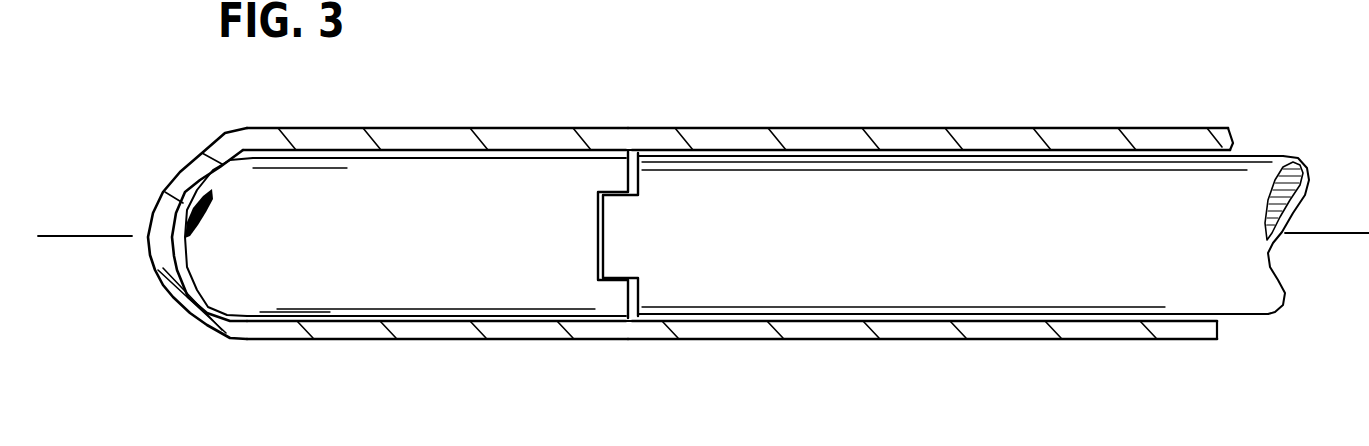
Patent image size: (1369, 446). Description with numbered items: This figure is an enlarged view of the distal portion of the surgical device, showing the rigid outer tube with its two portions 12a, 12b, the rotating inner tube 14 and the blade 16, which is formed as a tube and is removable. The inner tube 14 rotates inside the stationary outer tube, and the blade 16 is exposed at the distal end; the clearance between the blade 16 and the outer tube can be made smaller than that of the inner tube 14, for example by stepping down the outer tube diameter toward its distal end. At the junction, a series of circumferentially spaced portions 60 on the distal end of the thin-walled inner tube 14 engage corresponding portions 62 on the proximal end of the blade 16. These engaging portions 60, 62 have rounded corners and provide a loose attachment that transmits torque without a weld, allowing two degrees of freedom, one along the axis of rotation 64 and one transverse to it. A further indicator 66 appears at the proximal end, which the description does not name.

The first tubular housing section 12a is at (520, 137).
The second tubular housing section 12b is at (978, 128).
The inner tube 14 is at (973, 235).
The blade 16 is at (405, 237).
The circumferentially spaced portions 60 is at (655, 350).
The engaging portions 62 is at (623, 153).
The axis of rotation 64 is at (72, 215).
The right end direction line 66 is at (1328, 215).